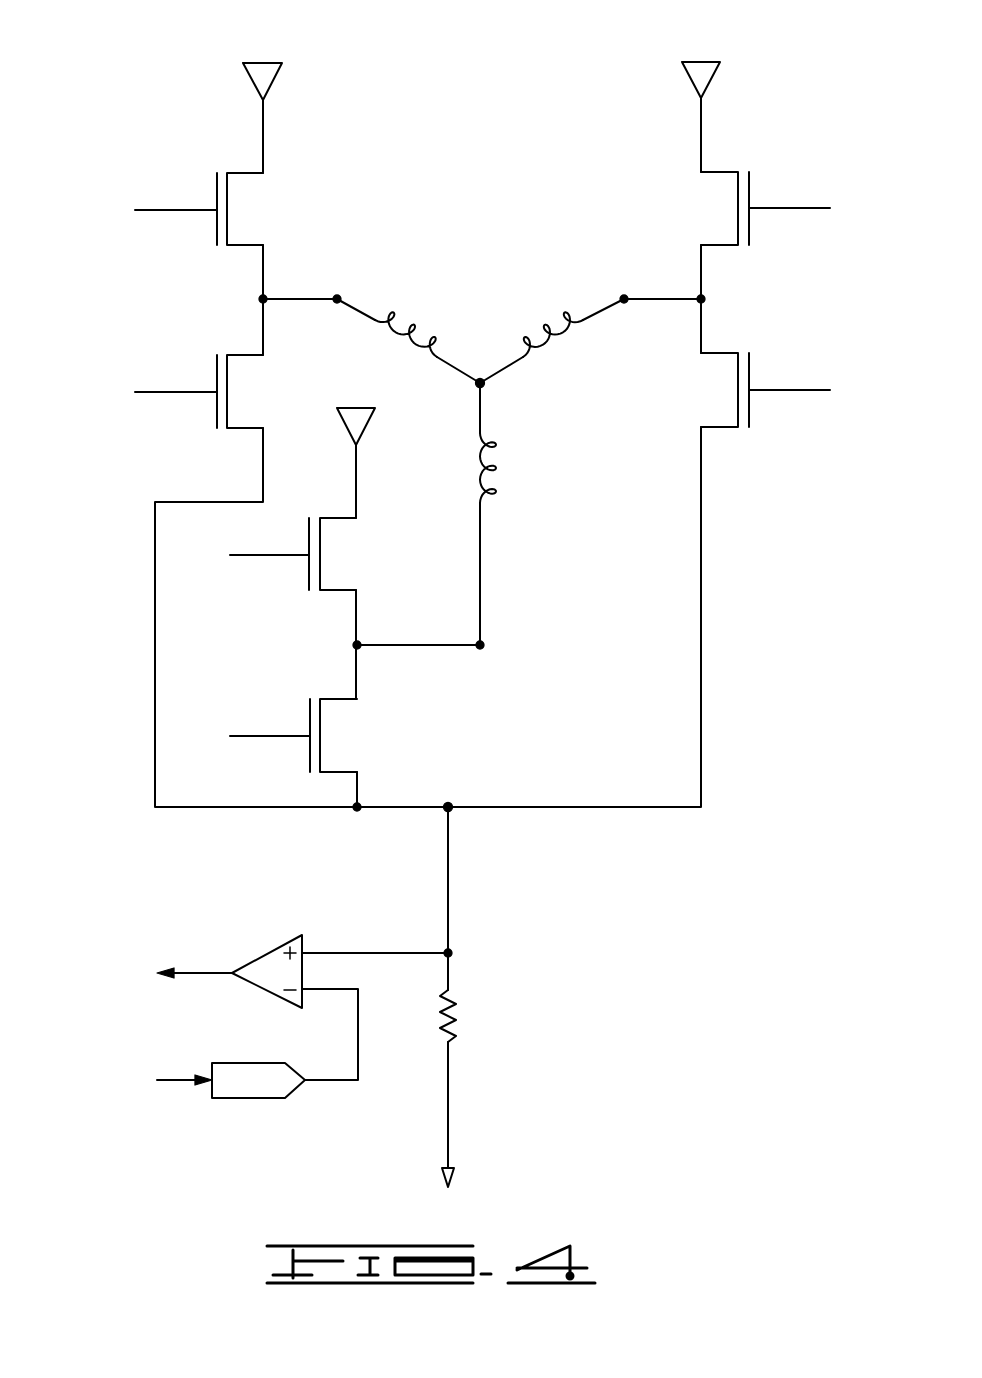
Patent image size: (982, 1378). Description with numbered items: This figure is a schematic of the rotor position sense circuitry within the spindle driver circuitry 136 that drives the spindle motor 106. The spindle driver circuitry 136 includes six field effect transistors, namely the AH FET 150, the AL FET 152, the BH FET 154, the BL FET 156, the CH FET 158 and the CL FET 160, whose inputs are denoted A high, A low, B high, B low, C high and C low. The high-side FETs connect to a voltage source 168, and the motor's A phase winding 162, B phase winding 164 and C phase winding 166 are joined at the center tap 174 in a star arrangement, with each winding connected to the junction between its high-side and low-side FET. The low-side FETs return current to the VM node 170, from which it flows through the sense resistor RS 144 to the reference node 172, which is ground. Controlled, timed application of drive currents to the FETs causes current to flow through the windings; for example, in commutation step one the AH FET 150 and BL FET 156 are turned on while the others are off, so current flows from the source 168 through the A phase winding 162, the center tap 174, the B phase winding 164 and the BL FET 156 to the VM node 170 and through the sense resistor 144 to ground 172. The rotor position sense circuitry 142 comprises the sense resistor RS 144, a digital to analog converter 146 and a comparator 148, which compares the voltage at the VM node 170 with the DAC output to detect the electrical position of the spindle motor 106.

The spindle driver circuitry 136 is at (198, 66).
The voltage source 168 is at (262, 62).
The AH FET 150 is at (216, 190).
The AL FET 152 is at (216, 375).
The BH FET 154 is at (751, 195).
The BL FET 156 is at (751, 410).
The CH FET 158 is at (308, 578).
The CL FET 160 is at (309, 760).
The spindle motor 106 is at (472, 298).
The A phase winding 162 is at (390, 334).
The B phase winding 164 is at (547, 356).
The C phase winding 166 is at (490, 499).
The center tap 174 is at (466, 393).
The VM node 170 is at (448, 796).
The rotor position sense circuitry 142 is at (546, 984).
The sense resistor RS 144 is at (455, 1030).
The reference node 172 is at (455, 1180).
The comparator 148 is at (268, 952).
The digital to analog converter 146 is at (262, 1098).